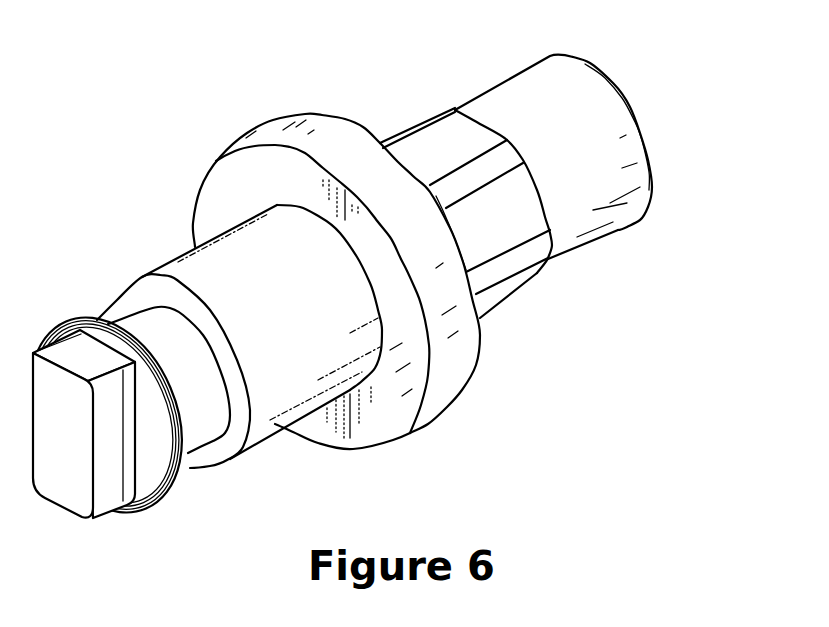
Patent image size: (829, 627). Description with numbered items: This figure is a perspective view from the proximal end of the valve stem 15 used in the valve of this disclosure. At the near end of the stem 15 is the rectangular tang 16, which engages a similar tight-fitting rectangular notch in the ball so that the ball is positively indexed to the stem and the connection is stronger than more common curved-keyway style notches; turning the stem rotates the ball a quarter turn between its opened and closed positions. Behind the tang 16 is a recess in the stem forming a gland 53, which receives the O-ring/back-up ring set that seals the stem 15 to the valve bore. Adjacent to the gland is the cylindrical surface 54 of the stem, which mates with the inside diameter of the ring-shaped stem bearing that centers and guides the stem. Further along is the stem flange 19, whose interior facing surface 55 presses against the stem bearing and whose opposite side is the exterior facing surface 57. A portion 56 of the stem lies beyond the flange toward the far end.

The valve stem 15 is at (634, 107).
The rectangular tang 16 is at (110, 450).
The stem flange 19 is at (277, 141).
The gland 53 is at (190, 450).
The surface 54 is at (283, 428).
The interior facing surface 55 is at (403, 373).
The hexagonal portion 56 is at (483, 230).
The exterior facing surface 57 is at (362, 125).